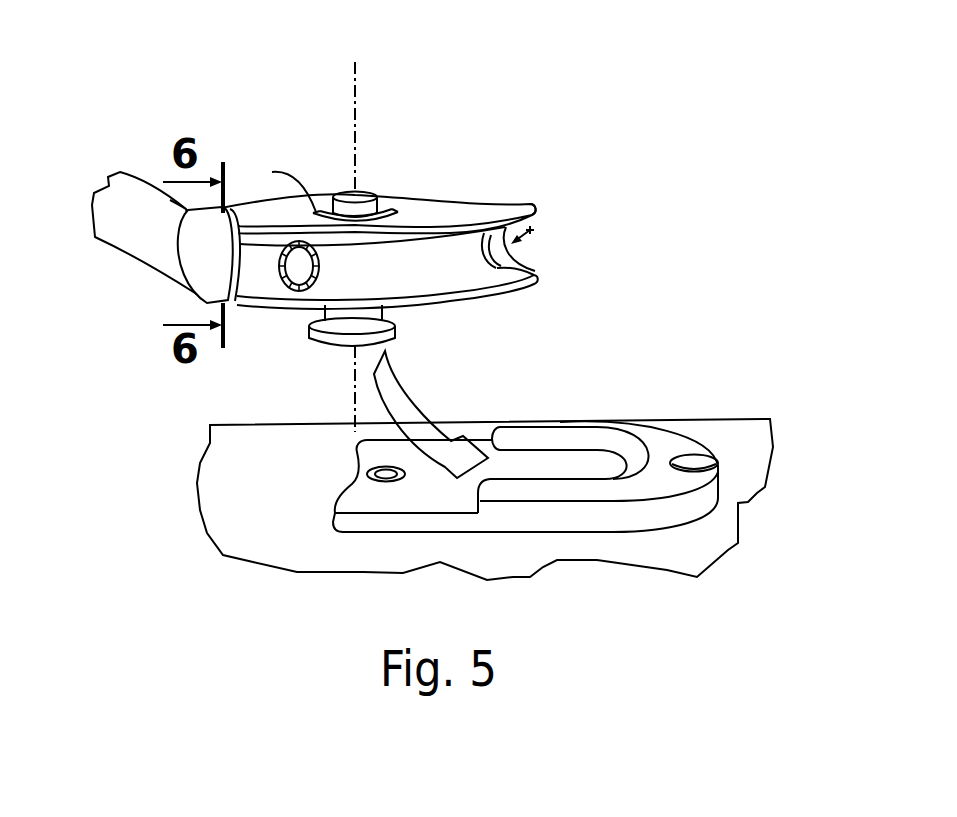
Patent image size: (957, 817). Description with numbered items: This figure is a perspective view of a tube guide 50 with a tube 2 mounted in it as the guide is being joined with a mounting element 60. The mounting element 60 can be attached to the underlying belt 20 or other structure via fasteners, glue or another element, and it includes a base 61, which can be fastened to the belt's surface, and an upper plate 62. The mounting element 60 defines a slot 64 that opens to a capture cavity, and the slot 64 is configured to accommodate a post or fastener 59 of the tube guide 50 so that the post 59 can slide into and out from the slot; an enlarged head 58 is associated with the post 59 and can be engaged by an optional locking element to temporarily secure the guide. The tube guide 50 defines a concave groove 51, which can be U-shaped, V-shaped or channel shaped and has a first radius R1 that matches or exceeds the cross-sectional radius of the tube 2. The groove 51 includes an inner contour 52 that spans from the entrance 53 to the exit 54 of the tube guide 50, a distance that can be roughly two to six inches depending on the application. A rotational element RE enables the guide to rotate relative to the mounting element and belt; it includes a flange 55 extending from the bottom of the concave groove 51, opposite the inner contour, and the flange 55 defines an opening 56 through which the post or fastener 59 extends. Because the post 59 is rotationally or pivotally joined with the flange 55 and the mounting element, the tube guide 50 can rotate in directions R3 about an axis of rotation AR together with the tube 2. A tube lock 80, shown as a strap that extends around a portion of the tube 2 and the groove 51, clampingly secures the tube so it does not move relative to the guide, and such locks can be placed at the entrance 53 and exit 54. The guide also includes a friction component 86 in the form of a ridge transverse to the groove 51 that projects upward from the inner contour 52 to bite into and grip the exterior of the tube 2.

The tube 2 is at (112, 215).
The belt 20 is at (752, 458).
The tube guide 50 is at (404, 229).
The concave groove 51 is at (452, 253).
The inner contour 52 is at (435, 272).
The entrance 53 is at (517, 228).
The exit 54 is at (177, 208).
The flange 55 is at (441, 209).
The opening 56 is at (383, 204).
The enlarged head 58 is at (323, 338).
The post or fastener 59 is at (365, 320).
The mounting element 60 is at (554, 468).
The base 61 is at (403, 522).
The upper plate 62 is at (650, 440).
The slot 64 is at (598, 462).
The tube lock 80 is at (198, 265).
The friction component 86 is at (498, 260).
The axis of rotation AR is at (356, 232).
The rotational element RE is at (335, 178).
The first radius R1 is at (539, 238).
The directions of rotation R3 is at (279, 182).